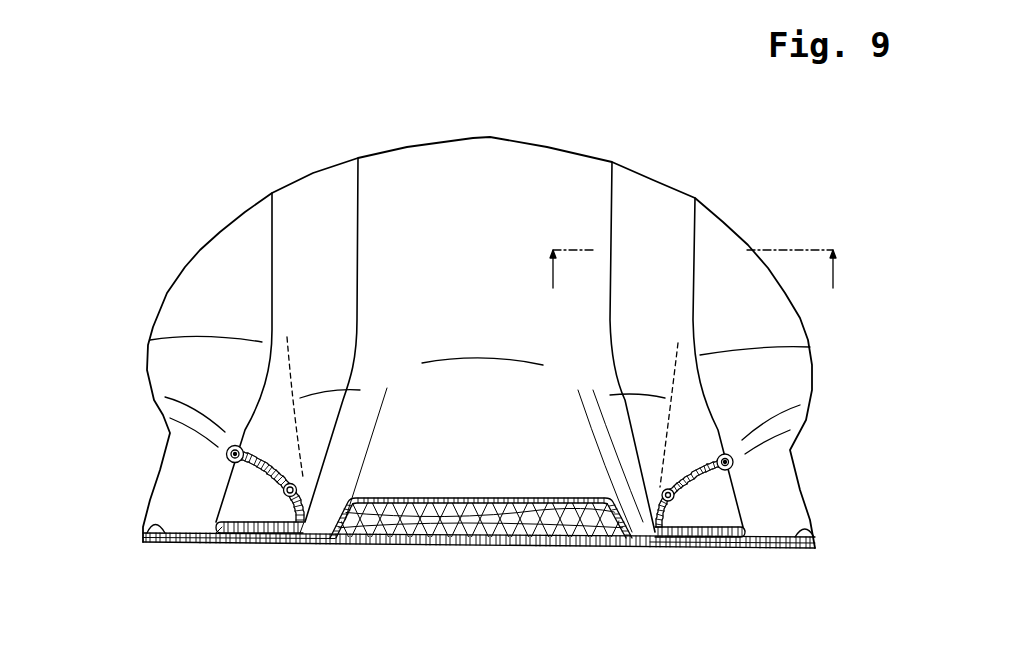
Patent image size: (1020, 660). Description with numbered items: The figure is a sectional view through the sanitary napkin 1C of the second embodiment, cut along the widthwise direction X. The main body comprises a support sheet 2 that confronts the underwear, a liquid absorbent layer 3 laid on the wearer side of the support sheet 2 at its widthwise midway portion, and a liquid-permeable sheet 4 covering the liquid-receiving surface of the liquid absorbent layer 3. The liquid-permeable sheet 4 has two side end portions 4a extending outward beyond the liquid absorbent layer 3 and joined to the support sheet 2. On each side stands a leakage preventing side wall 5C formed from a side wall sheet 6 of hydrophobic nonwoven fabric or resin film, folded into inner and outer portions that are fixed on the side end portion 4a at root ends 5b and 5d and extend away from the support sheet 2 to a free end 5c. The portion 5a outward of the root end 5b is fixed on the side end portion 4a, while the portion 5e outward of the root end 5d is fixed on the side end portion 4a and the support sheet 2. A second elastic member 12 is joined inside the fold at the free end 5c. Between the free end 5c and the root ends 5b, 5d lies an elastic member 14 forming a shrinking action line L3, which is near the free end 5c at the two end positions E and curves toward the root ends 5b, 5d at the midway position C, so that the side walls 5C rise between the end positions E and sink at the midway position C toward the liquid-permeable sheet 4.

The sanitary napkin 1C is at (745, 180).
The leakage preventing side wall 5C is at (266, 273).
The end position E is at (366, 347).
The side wall sheet 6 is at (150, 340).
The free end 5c is at (165, 397).
The midway position C is at (170, 418).
The root end 5b is at (303, 477).
The elastic member 14 is at (327, 470).
The shrinking action line L3 is at (360, 390).
The support sheet 2 is at (436, 547).
The portion extending outwardly of the root end 5d 5e is at (150, 527).
The root end 5d is at (280, 497).
The second elastic member 12 is at (230, 464).
The liquid-permeable sheet 4 is at (466, 497).
The liquid absorbent layer 3 is at (527, 527).
The portion extending outwardly of the root end 5b 5a is at (243, 543).
The side end portion 4a is at (278, 543).
The widthwise direction X is at (693, 284).